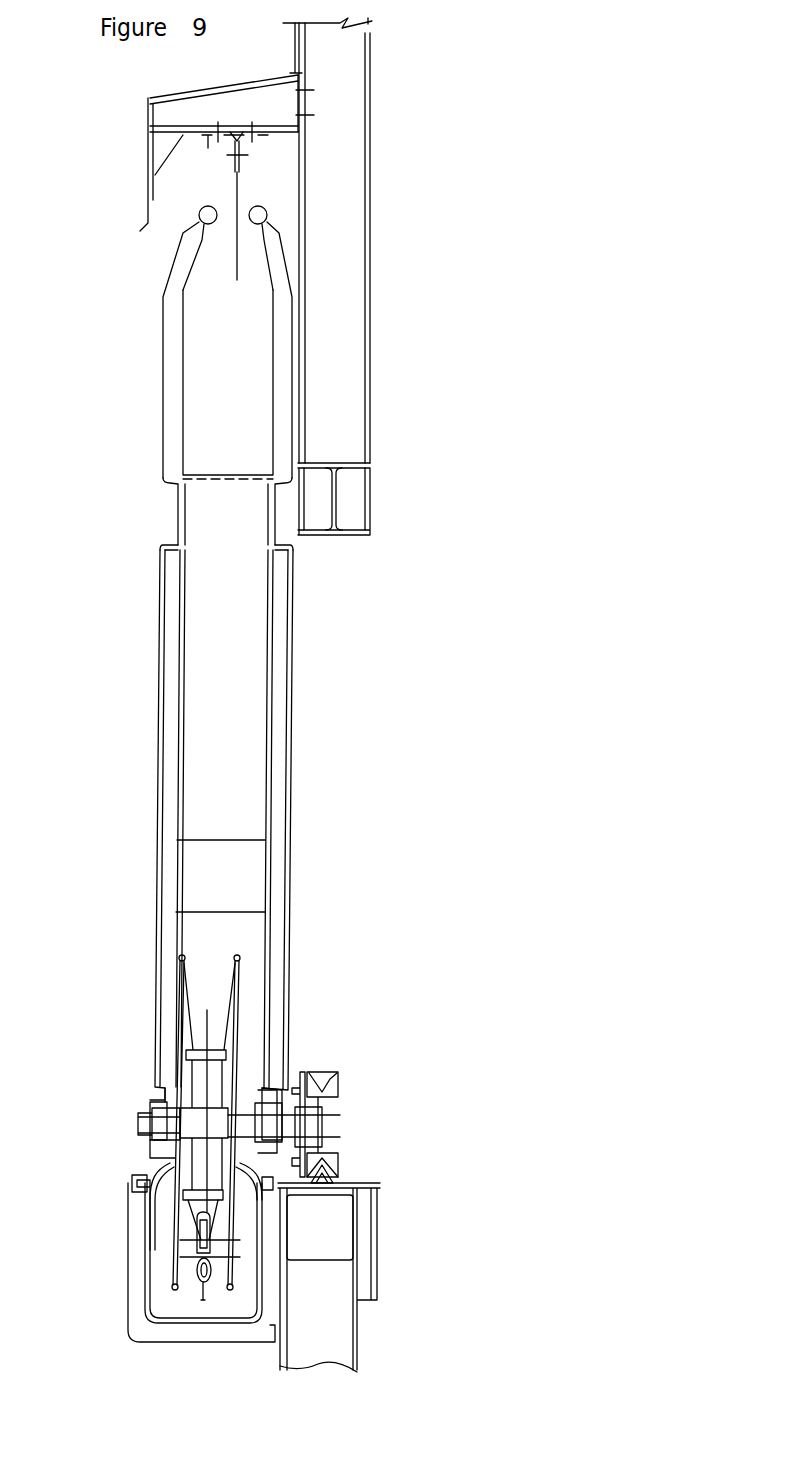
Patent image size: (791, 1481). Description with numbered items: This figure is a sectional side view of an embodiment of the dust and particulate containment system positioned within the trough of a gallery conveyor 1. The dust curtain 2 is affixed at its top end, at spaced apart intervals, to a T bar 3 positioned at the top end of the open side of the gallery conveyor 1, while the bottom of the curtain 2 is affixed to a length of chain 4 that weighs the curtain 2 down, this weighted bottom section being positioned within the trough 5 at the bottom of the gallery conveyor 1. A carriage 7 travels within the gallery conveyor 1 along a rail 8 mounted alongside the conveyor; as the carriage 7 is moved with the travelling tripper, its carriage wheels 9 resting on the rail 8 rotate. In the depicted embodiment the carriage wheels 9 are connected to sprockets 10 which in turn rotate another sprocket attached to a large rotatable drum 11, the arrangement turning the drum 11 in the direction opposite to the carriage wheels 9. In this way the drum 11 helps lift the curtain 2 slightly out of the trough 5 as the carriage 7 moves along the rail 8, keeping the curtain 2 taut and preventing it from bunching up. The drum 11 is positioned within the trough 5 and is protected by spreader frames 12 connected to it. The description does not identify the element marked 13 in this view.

The gallery conveyor 1 is at (368, 287).
The dust curtain 2 is at (237, 233).
The T bar 3 is at (233, 140).
The chain 4 is at (203, 1293).
The trough 5 is at (123, 1262).
The carriage 7 is at (285, 767).
The rail 8 is at (333, 1182).
The carriage wheels 9 is at (337, 1072).
The sprockets 10 is at (302, 1072).
The rotatable drum 11 is at (237, 958).
The spreader frames 12 is at (143, 1173).
The inner tube 13 is at (272, 382).